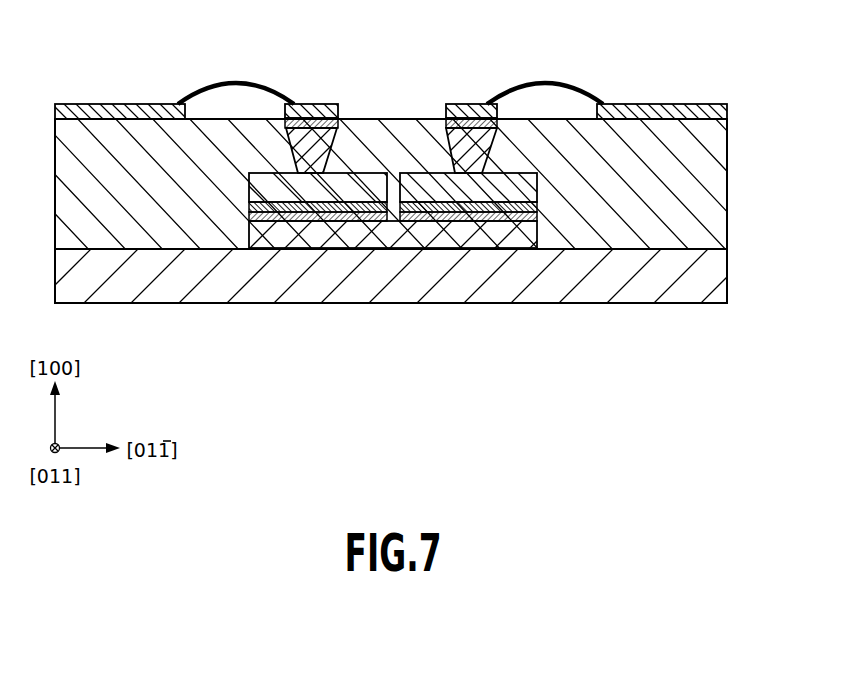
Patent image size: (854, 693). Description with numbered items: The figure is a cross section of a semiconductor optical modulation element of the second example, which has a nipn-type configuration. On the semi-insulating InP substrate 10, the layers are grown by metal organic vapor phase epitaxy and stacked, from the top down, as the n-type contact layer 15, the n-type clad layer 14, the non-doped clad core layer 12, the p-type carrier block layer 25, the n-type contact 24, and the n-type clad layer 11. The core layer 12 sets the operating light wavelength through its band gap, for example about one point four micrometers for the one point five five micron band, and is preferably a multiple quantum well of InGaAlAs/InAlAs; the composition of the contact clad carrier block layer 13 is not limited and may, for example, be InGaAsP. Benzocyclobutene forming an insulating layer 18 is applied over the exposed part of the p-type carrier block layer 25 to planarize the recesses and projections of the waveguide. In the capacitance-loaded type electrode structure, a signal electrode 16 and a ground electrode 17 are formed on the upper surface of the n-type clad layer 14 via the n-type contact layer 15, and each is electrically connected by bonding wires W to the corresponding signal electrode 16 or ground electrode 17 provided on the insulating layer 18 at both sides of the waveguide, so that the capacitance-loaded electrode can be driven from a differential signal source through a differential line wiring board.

The substrate 10 is at (700, 284).
The insulating layer 18 is at (700, 200).
The signal electrode 16 is at (87, 108).
The ground electrode 17 is at (465, 106).
The bonding wire W is at (224, 82).
The n-type contact layer 15 is at (342, 122).
The n-type clad layer 14 is at (295, 151).
The core layer 12 is at (275, 198).
The p-type carrier block layer 25 is at (307, 207).
The contact clad carrier block layer 13 is at (481, 207).
The n-type contact 24 is at (342, 217).
The n-type clad layer 11 is at (393, 238).